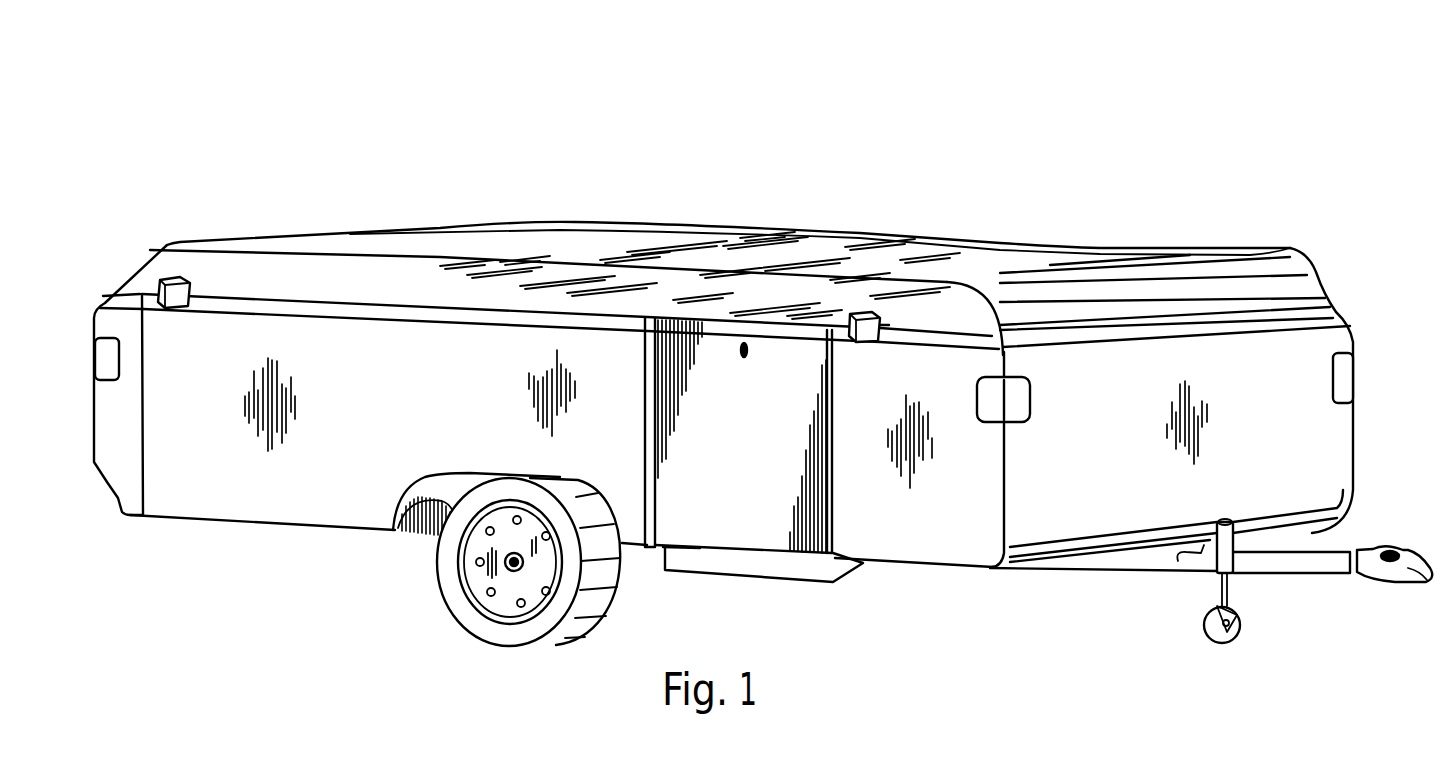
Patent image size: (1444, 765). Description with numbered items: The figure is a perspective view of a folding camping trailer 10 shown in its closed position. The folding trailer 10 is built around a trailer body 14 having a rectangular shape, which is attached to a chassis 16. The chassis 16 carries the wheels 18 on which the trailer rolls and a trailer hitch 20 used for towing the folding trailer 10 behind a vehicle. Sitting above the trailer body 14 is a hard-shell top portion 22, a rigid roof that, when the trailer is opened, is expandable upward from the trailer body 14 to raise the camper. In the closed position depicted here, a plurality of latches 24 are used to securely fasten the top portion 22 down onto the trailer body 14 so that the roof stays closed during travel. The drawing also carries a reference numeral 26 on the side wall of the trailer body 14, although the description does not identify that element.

The folding camping trailer 10 is at (375, 186).
The trailer body 14 is at (1356, 342).
The chassis 16 is at (1388, 547).
The wheels 18 is at (611, 592).
The trailer hitch 20 is at (1228, 582).
The hard-shell top portion 22 is at (903, 233).
The latches 24 is at (170, 278).
The door / side wall 26 is at (441, 410).